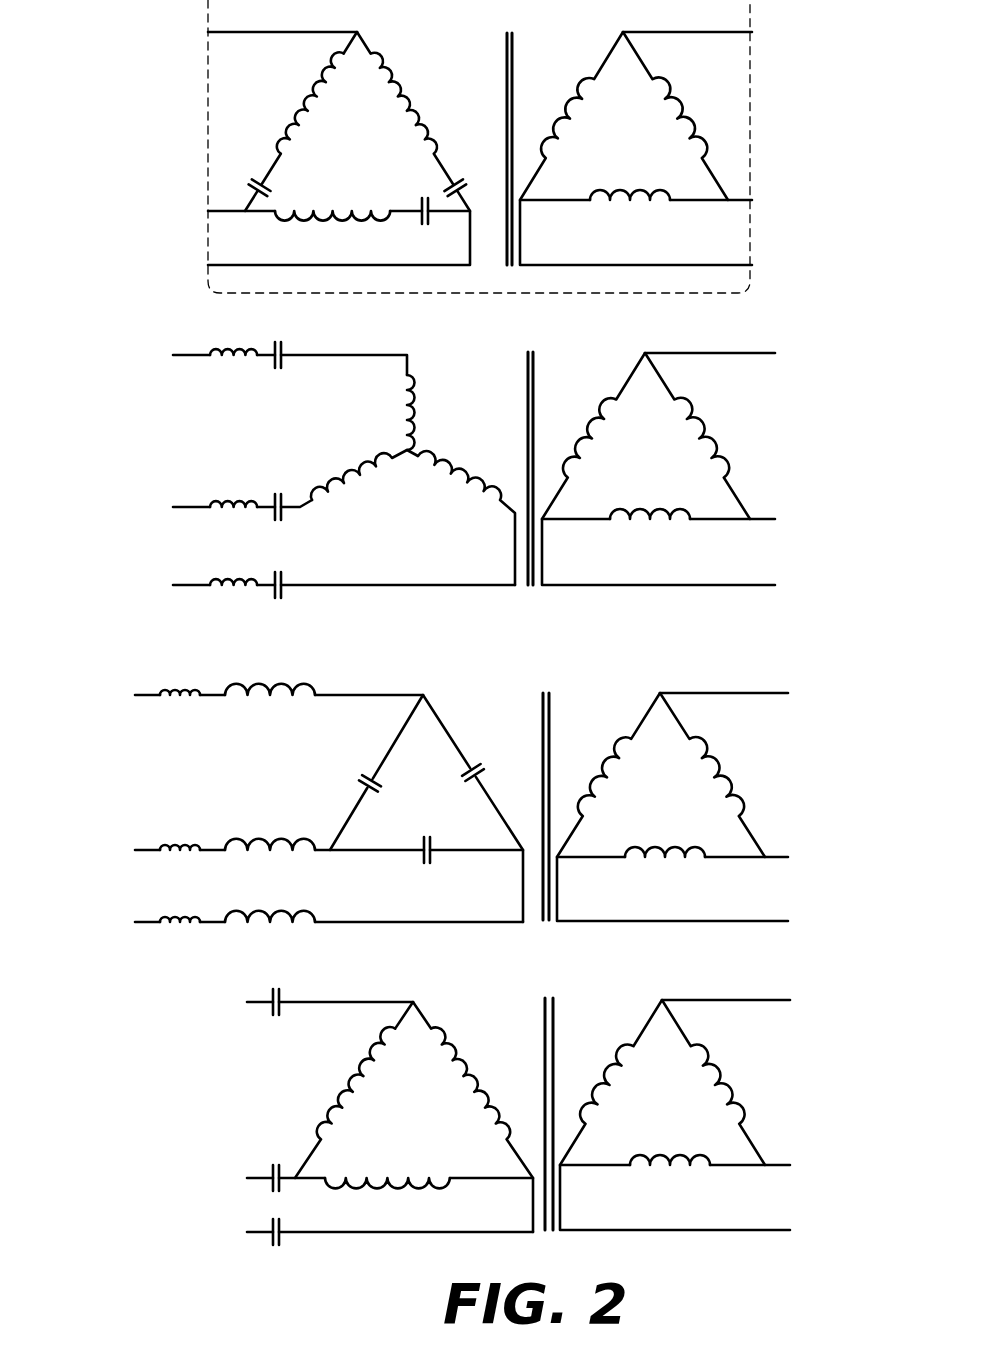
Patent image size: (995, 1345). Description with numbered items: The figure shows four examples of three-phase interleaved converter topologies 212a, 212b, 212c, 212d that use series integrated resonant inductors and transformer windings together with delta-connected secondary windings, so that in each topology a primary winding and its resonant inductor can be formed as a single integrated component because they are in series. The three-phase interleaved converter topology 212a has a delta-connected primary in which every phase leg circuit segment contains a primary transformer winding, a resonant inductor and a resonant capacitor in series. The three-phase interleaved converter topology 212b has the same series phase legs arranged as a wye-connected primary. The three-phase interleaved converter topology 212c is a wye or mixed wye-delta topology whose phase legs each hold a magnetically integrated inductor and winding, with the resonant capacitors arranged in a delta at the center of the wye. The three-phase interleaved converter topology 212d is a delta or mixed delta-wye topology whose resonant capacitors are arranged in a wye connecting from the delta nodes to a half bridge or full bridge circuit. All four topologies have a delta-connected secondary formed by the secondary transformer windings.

The three-phase interleaved converter topology 212a is at (205, 85).
The three-phase interleaved converter topology 212b is at (138, 428).
The three-phase interleaved converter topology 212c is at (115, 745).
The three-phase interleaved converter topology 212d is at (176, 1055).